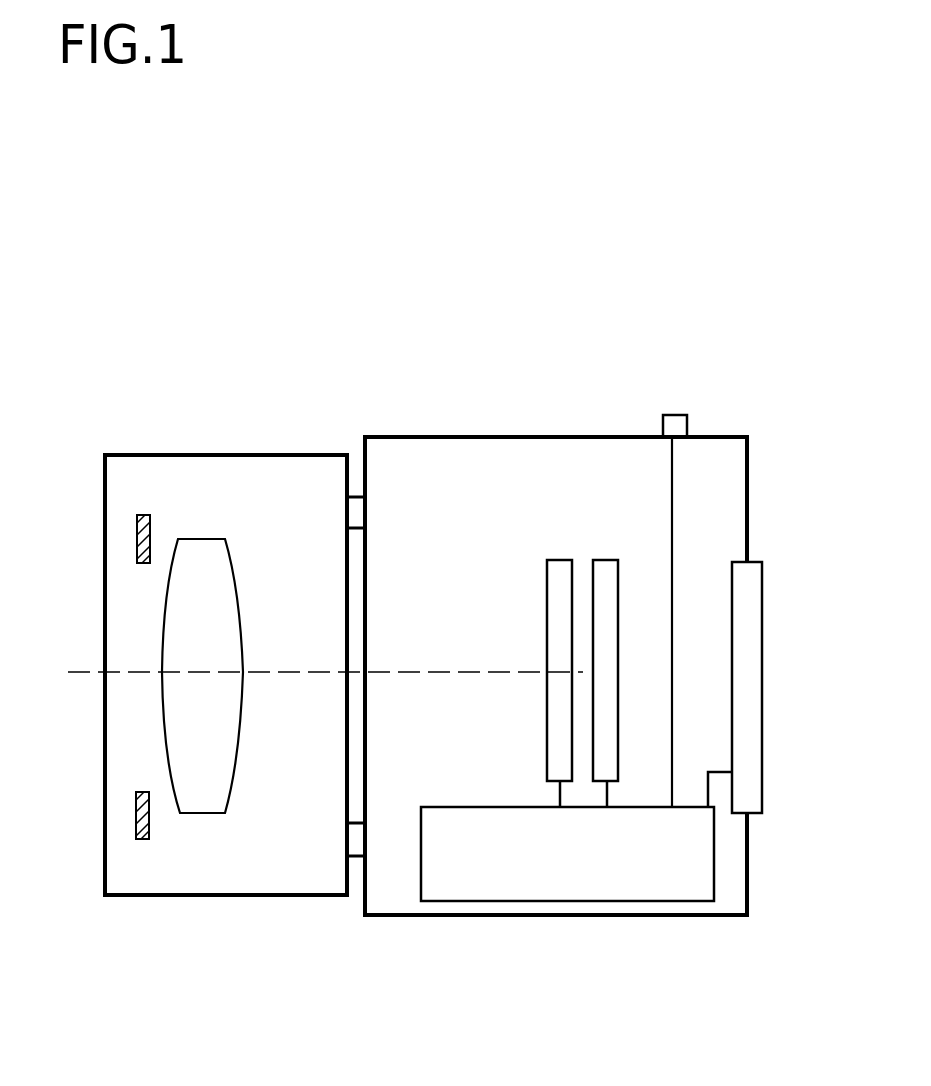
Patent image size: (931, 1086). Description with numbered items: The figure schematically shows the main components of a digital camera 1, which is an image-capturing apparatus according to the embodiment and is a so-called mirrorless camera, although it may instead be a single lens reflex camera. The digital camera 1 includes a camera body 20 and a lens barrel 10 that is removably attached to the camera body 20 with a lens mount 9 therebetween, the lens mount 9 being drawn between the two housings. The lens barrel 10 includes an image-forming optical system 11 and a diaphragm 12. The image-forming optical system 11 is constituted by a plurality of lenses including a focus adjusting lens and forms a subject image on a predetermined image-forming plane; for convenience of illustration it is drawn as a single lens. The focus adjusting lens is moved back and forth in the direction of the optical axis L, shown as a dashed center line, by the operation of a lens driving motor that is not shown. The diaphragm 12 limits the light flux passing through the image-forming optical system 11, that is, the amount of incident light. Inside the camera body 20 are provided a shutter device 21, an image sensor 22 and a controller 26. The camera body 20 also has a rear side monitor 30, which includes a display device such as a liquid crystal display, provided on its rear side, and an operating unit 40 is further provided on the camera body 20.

The digital camera 1 is at (768, 255).
The lens mount 9 is at (357, 513).
The lens barrel 10 is at (217, 455).
The image-forming optical system 11 is at (203, 570).
The diaphragm 12 is at (145, 515).
The optical axis L is at (277, 672).
The camera body 20 is at (590, 437).
The shutter device 21 is at (557, 560).
The image sensor 22 is at (601, 560).
The controller 26 is at (700, 878).
The rear side monitor 30 is at (763, 690).
The operating unit 40 is at (674, 415).